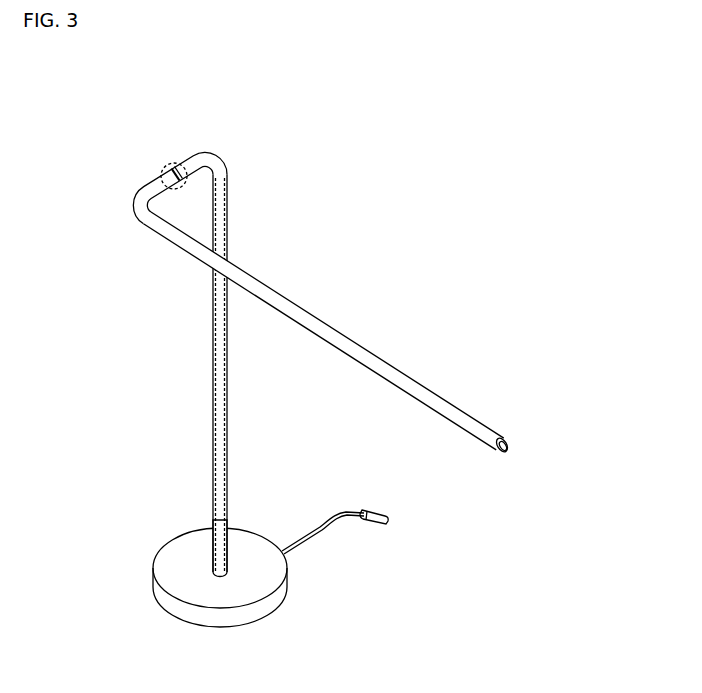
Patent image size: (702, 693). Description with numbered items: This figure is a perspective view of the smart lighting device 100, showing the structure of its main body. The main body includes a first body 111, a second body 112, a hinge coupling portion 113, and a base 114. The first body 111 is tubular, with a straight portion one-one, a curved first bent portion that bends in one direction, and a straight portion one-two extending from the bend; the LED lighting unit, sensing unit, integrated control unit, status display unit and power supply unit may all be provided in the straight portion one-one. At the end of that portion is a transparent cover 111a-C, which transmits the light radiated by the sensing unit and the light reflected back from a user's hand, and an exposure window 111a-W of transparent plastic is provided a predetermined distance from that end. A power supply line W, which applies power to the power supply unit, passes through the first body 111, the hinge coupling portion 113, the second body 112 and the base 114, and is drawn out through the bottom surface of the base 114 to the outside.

The smart lighting device 100 is at (398, 143).
The first body 111 is at (180, 244).
The second body 112 is at (226, 205).
The hinge coupling portion 113 is at (172, 163).
The base 114 is at (167, 607).
The exposure window 111a-W is at (500, 432).
The transparent cover 111a-C is at (511, 452).
The power supply line W is at (325, 528).